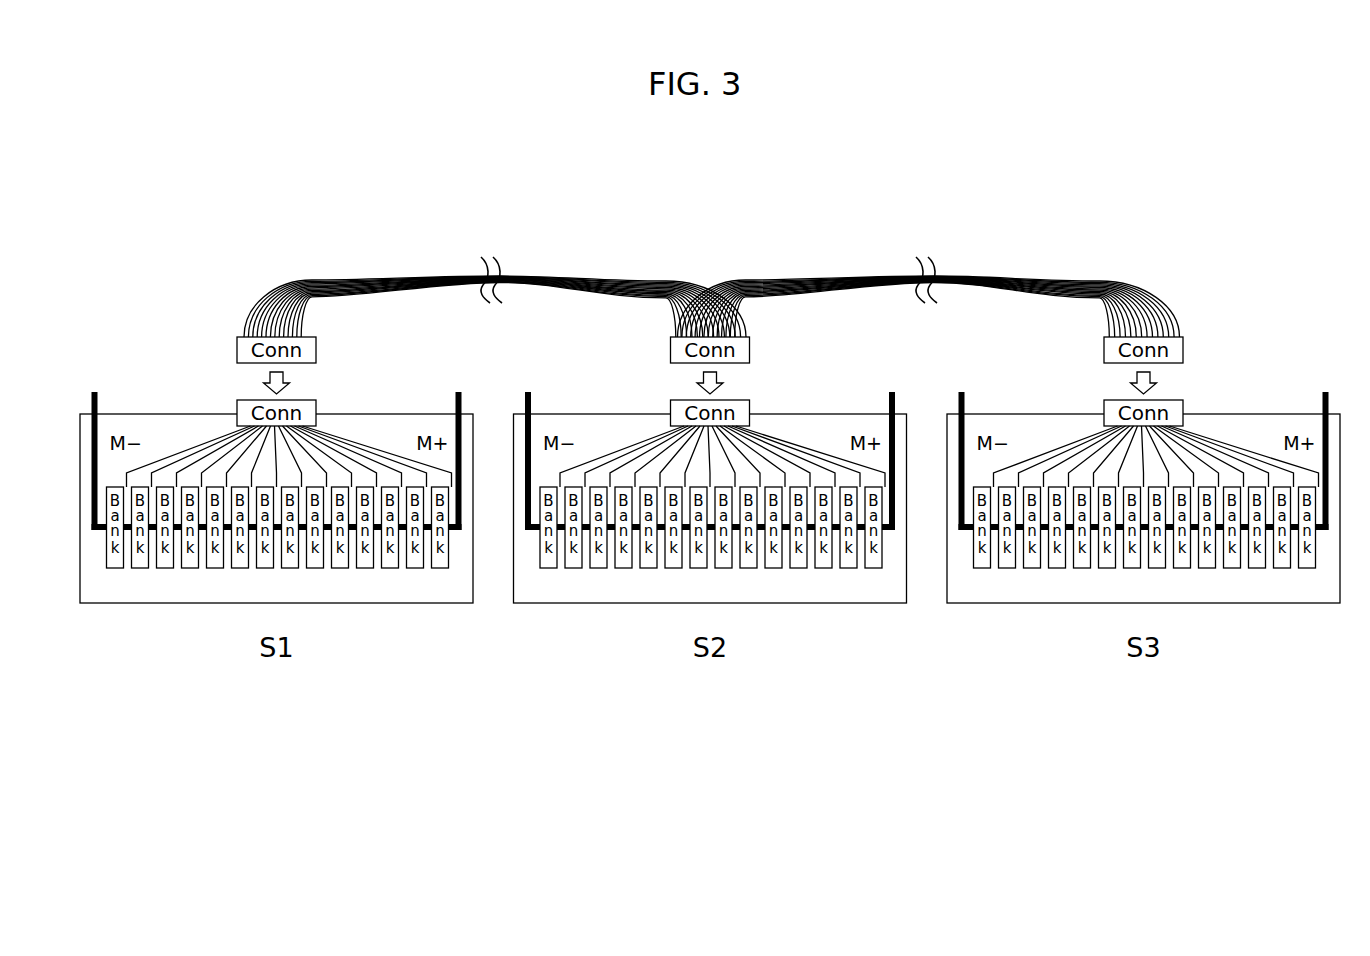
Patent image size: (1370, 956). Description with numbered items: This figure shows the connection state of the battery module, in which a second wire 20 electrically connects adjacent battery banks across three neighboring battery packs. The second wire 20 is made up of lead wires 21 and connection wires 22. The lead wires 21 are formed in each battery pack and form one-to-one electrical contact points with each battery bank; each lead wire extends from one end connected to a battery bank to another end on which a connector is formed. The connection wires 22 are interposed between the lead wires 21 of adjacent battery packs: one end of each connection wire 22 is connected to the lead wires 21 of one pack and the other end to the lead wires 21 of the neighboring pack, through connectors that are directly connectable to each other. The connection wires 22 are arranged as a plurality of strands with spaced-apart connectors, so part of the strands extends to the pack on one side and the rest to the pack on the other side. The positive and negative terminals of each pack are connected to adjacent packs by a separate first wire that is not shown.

The second wire 20 is at (140, 298).
The lead wires 21 is at (187, 446).
The connection wires 22 is at (243, 318).